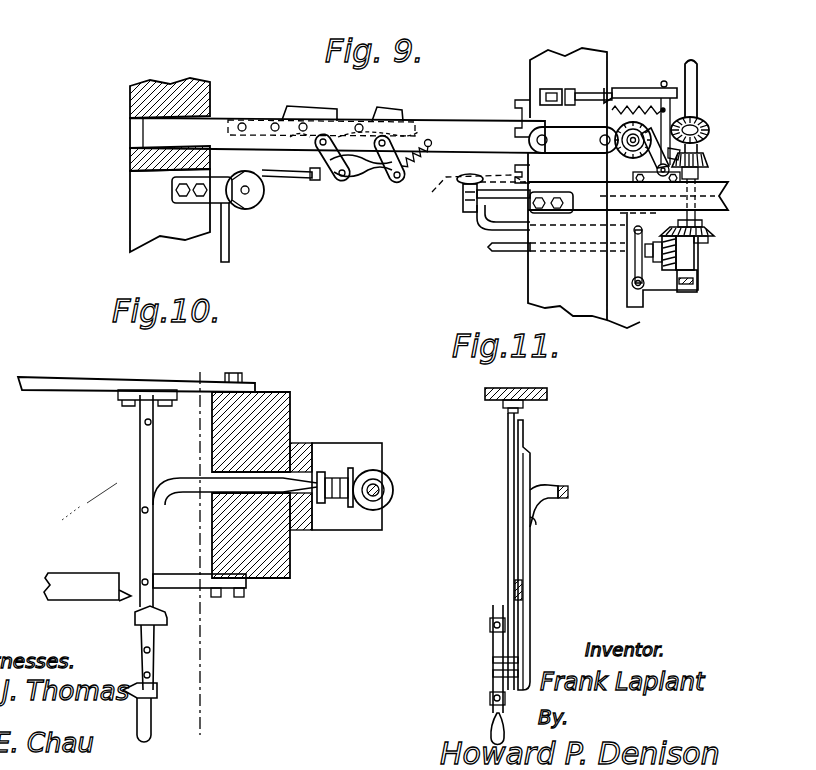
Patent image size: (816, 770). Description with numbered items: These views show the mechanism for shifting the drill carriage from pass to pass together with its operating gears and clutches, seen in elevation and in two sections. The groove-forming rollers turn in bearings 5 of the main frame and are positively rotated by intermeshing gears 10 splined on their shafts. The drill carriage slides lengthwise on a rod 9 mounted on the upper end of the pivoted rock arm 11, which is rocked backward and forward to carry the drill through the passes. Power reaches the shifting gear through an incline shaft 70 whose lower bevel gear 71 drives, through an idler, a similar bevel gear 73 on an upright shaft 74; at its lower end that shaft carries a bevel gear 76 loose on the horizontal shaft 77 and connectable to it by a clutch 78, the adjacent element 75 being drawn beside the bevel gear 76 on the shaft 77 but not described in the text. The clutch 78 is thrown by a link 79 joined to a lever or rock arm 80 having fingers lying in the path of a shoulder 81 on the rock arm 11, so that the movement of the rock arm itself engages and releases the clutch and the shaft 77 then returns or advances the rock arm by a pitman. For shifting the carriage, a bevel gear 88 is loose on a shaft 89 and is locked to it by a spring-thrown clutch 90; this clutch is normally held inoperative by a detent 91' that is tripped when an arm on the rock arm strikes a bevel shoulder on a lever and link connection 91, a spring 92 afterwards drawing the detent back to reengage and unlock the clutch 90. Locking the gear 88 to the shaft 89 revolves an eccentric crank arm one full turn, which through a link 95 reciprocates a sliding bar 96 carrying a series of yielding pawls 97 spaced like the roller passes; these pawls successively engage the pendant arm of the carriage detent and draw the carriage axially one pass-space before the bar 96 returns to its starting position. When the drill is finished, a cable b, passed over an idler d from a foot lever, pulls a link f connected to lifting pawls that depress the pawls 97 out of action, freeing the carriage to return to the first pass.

In FIG. 9, the bearings 5 is at (178, 82).
In FIG. 10, the bearings 5 is at (291, 412).
In FIG. 9, the rod 9 is at (333, 163).
In FIG. 9, the link f is at (362, 172).
In FIG. 9, the idler d is at (258, 200).
In FIG. 9, the cable b is at (232, 250).
In FIG. 9, the intermeshing gears 10 is at (432, 191).
In FIG. 10, the rock arm 11 is at (58, 568).
In FIG. 9, the incline shaft 70 is at (698, 82).
In FIG. 9, the bevel gear 71 is at (709, 131).
In FIG. 9, the bevel gear 73 is at (708, 165).
In FIG. 9, the upright shaft 74 is at (717, 206).
In FIG. 10, the upright shaft 74 is at (380, 483).
In FIG. 9, the bevel gear / hand wheel 75 is at (710, 240).
In FIG. 10, the bevel gear / hand wheel 75 is at (393, 490).
In FIG. 9, the bevel gear 76 is at (670, 272).
In FIG. 10, the bevel gear 76 is at (351, 507).
In FIG. 9, the horizontal shaft 77 is at (493, 252).
In FIG. 9, the clutch 78 is at (648, 251).
In FIG. 10, the clutch 78 is at (327, 503).
In FIG. 9, the link 79 is at (473, 212).
In FIG. 10, the link 79 is at (181, 485).
In FIG. 11, the link 79 is at (531, 542).
In FIG. 9, the rock arm 80 is at (462, 198).
In FIG. 10, the rock arm 80 is at (152, 666).
In FIG. 11, the rock arm 80 is at (493, 683).
In FIG. 10, the shoulder 81 is at (122, 602).
In FIG. 9, the bevel gear 88 is at (639, 151).
In FIG. 9, the shaft 89 is at (630, 150).
In FIG. 9, the clutch 90 is at (631, 152).
In FIG. 9, the lever and link connection 91 is at (590, 111).
In FIG. 9, the detent 91' is at (721, 146).
In FIG. 9, the spring 92 is at (648, 106).
In FIG. 9, the link 95 is at (579, 153).
In FIG. 9, the sliding bar 96 is at (452, 128).
In FIG. 9, the yielding pawls 97 is at (288, 115).